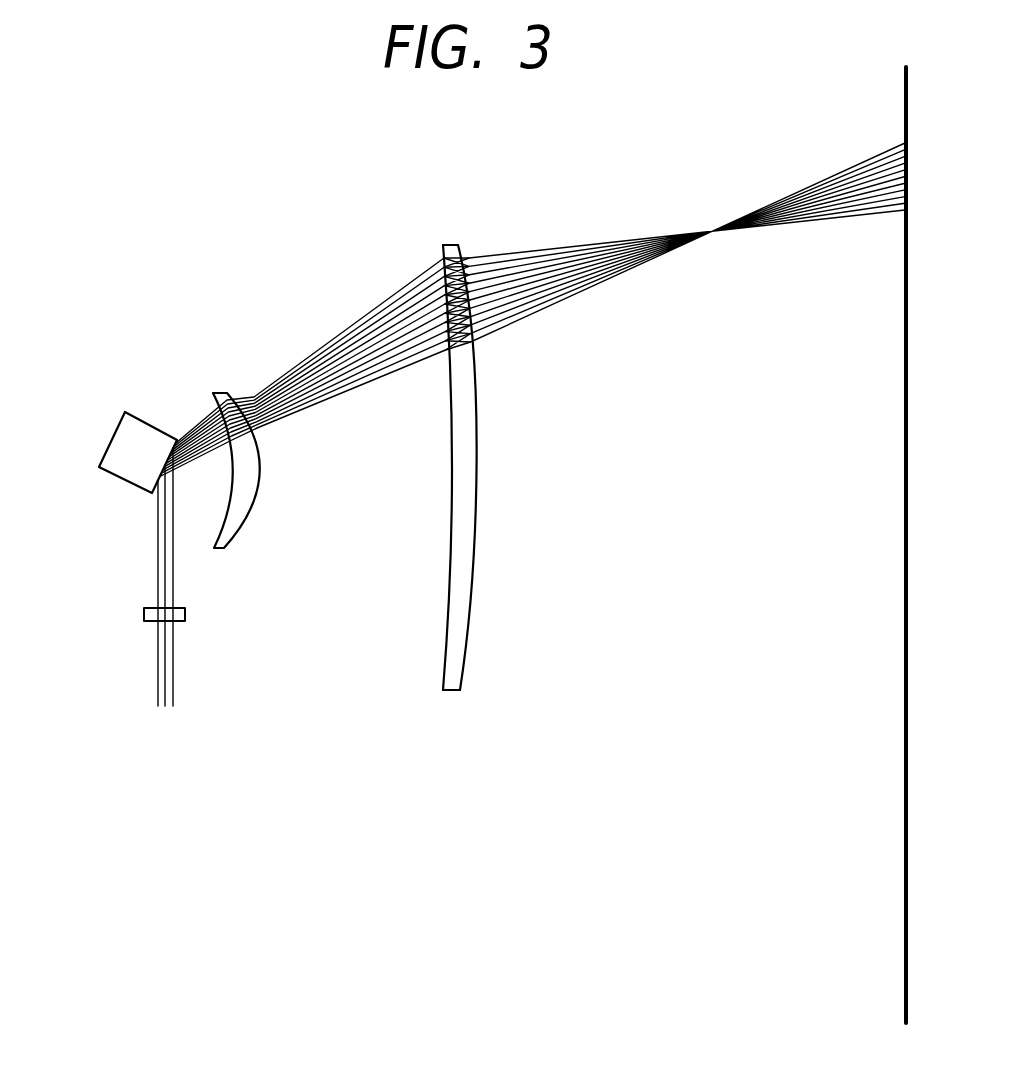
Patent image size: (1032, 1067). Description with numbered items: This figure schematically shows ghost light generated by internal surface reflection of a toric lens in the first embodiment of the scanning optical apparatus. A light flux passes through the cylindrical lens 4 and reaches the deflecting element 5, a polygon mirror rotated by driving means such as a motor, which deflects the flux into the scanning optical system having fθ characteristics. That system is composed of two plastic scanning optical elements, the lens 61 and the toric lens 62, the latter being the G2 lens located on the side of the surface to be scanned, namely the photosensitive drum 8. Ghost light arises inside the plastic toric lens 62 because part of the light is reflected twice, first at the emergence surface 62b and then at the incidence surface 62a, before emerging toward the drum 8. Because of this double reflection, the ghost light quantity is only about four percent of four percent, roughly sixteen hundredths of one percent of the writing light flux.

The deflecting element 5 is at (112, 438).
The cylindrical lens 4 is at (144, 613).
The plastic lens 61 is at (245, 530).
The toric lens 62 is at (458, 525).
The incidence surface 62a is at (444, 648).
The emergence surface 62b is at (470, 645).
The photosensitive drum 8 is at (906, 977).